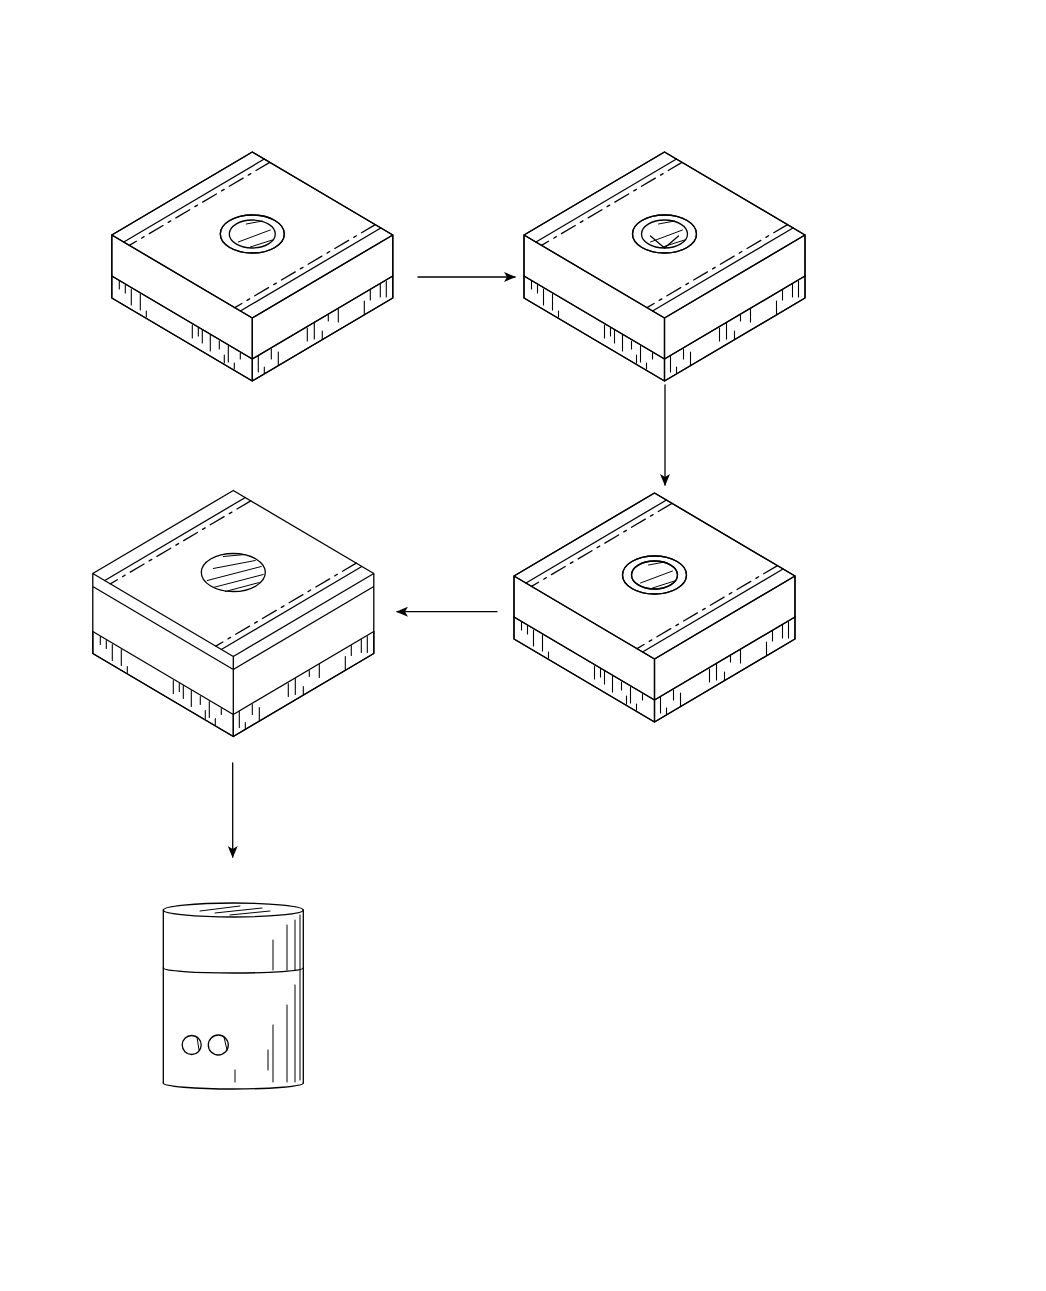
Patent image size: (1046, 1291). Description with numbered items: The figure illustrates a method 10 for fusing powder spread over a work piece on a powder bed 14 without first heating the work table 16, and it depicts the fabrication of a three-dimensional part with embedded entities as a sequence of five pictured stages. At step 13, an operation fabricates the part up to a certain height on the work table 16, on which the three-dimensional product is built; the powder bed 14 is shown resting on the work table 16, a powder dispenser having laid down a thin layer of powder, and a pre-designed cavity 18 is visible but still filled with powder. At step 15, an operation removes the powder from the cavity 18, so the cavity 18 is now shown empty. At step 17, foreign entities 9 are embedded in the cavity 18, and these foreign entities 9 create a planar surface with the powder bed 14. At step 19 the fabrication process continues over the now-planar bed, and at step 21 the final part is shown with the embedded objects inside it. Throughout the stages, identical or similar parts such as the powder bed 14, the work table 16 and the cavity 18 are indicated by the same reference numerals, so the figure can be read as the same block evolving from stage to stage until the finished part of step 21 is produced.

The method 10 is at (728, 52).
The step 13 is at (122, 197).
The powder bed 14 is at (378, 235).
The step 15 is at (575, 178).
The work table 16 is at (345, 317).
The step 17 is at (537, 532).
The cavity 18 is at (270, 217).
The step 19 is at (342, 525).
The foreign entities 9 is at (642, 570).
The step 21 is at (295, 883).